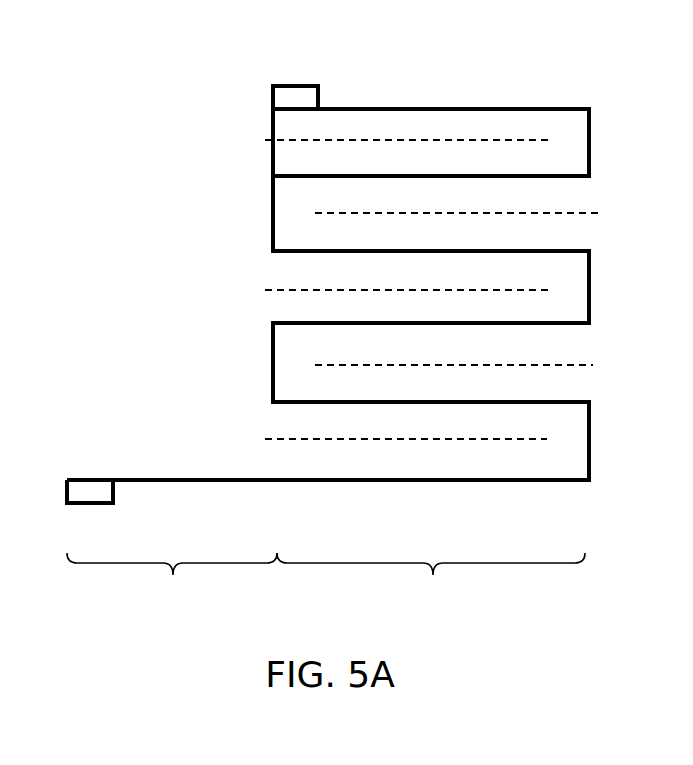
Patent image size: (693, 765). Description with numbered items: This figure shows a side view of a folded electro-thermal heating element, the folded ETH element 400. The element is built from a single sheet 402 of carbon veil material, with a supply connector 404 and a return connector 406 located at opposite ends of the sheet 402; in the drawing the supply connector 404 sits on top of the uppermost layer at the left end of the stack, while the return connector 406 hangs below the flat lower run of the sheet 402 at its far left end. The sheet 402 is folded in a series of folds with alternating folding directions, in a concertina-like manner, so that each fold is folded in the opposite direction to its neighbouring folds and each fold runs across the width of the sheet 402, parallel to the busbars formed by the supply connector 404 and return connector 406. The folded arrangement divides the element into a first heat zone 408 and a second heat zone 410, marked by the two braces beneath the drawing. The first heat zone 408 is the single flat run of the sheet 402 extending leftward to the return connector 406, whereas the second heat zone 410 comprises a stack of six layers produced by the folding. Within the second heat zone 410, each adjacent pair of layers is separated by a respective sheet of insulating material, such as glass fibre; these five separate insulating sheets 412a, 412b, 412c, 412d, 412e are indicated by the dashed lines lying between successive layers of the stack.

The folded ETH element 400 is at (373, 310).
The sheet 402 is at (418, 108).
The supply connector 404 is at (295, 86).
The return connector 406 is at (90, 503).
The first heat zone 408 is at (172, 585).
The second heat zone 410 is at (431, 585).
The sheet of insulating material 412a is at (266, 140).
The sheet of insulating material 412b is at (598, 213).
The sheet of insulating material 412c is at (266, 290).
The sheet of insulating material 412d is at (596, 365).
The sheet of insulating material 412e is at (266, 439).